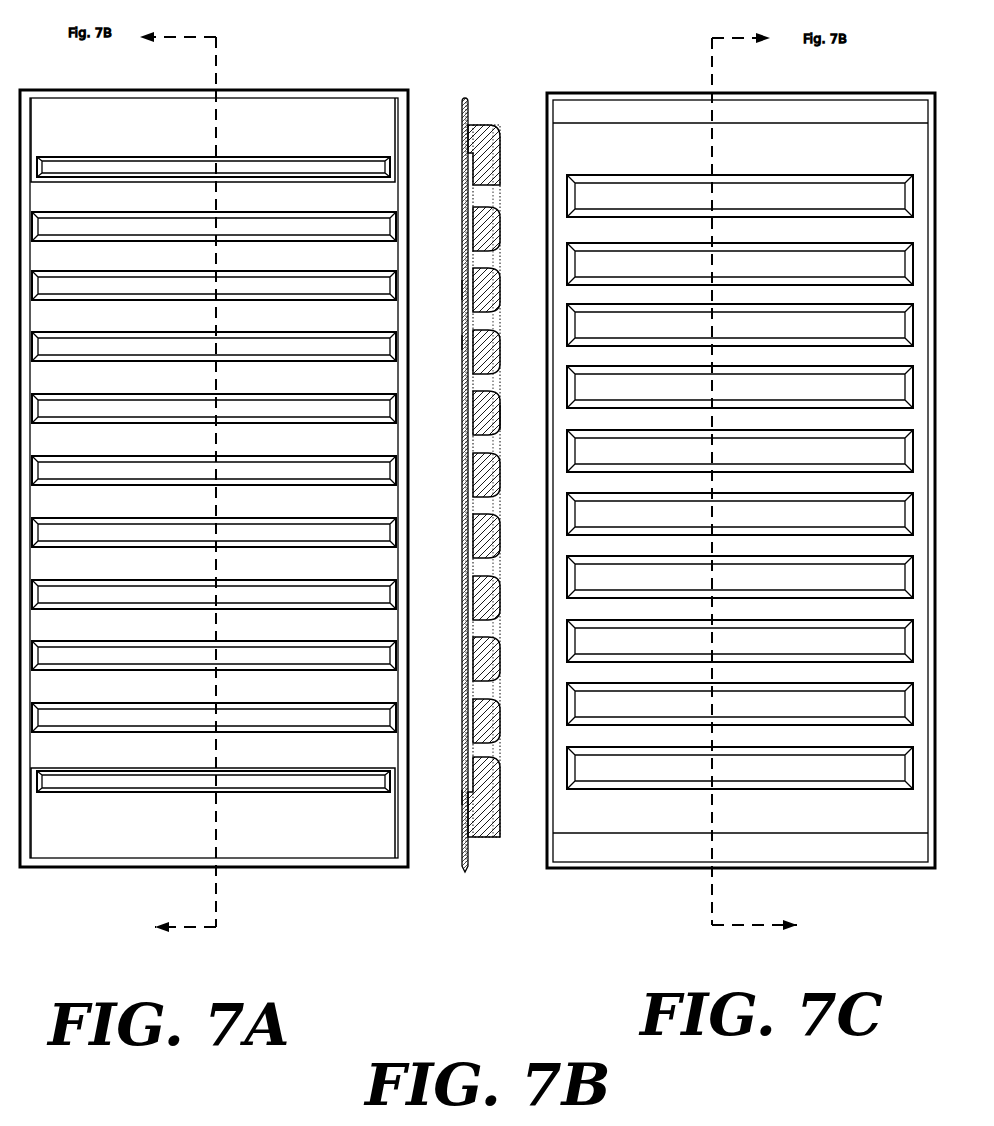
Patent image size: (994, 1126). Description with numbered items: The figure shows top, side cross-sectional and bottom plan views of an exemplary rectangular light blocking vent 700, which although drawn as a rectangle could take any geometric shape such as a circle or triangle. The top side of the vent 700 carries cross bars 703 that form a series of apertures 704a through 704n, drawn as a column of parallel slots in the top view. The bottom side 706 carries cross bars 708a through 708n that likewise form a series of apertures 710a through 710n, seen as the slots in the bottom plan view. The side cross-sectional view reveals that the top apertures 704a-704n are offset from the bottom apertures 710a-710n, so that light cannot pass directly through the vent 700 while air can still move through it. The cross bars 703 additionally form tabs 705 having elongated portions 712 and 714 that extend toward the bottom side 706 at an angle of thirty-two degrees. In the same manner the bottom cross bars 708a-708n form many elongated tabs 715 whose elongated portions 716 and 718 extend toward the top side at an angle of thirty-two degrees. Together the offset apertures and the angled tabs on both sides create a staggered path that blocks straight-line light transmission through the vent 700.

In FIG. 7A, the light blocking vent 700 is at (312, 82).
In FIG. 7B, the light blocking vent 700 is at (478, 476).
In FIG. 7C, the light blocking vent 700 is at (741, 456).
In FIG. 7A, the cross bars 703 is at (263, 178).
In FIG. 7A, the aperture 704a is at (80, 172).
In FIG. 7A, the aperture 704n is at (95, 786).
In FIG. 7B, the aperture 704n is at (460, 797).
In FIG. 7B, the tabs 705 is at (460, 263).
In FIG. 7C, the bottom side 706 is at (815, 92).
In FIG. 7B, the cross bar 708a is at (458, 215).
In FIG. 7C, the cross bar 708a is at (755, 160).
In FIG. 7C, the cross bar 708n is at (755, 818).
In FIG. 7B, the aperture 710a is at (503, 250).
In FIG. 7C, the aperture 710a is at (603, 183).
In FIG. 7B, the aperture 710n is at (482, 757).
In FIG. 7C, the aperture 710n is at (688, 768).
In FIG. 7B, the elongated portion 712 is at (465, 303).
In FIG. 7B, the elongated portion 714 is at (465, 342).
In FIG. 7B, the elongated tabs 715 is at (507, 288).
In FIG. 7B, the elongated portion 716 is at (503, 392).
In FIG. 7B, the elongated portion 718 is at (507, 418).